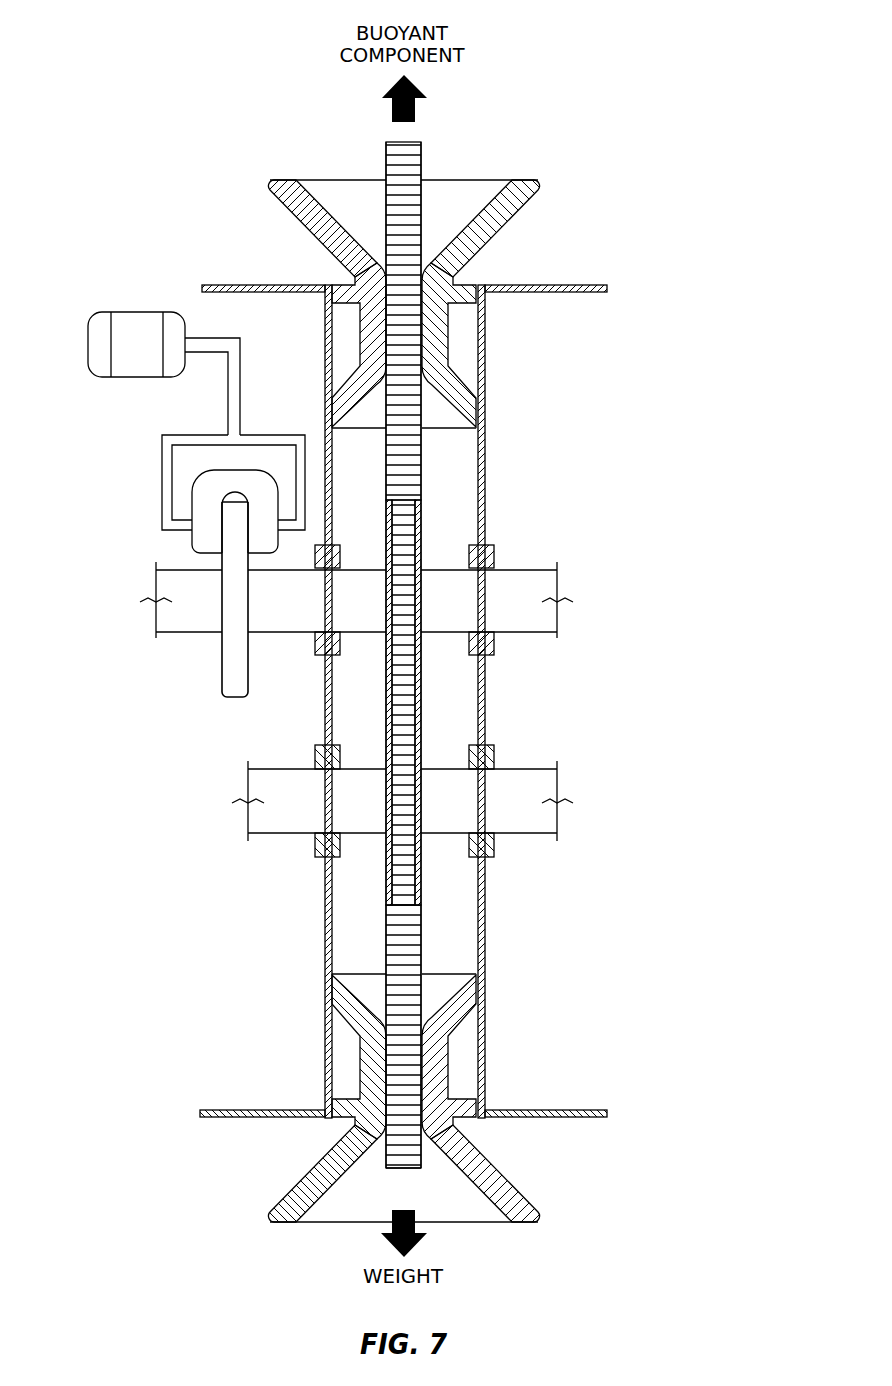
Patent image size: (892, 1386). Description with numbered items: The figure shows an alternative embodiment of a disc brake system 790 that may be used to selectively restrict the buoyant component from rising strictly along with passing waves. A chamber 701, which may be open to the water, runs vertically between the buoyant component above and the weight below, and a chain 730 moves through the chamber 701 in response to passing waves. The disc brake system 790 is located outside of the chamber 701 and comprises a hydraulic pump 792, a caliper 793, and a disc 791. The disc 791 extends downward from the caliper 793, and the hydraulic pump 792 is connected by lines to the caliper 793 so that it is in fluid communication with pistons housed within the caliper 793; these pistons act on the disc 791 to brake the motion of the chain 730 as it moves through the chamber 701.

The chamber 701 is at (450, 512).
The chain 730 is at (422, 155).
The disc brake system 790 is at (168, 441).
The disc 791 is at (235, 663).
The hydraulic pump 792 is at (156, 357).
The caliper 793 is at (205, 540).